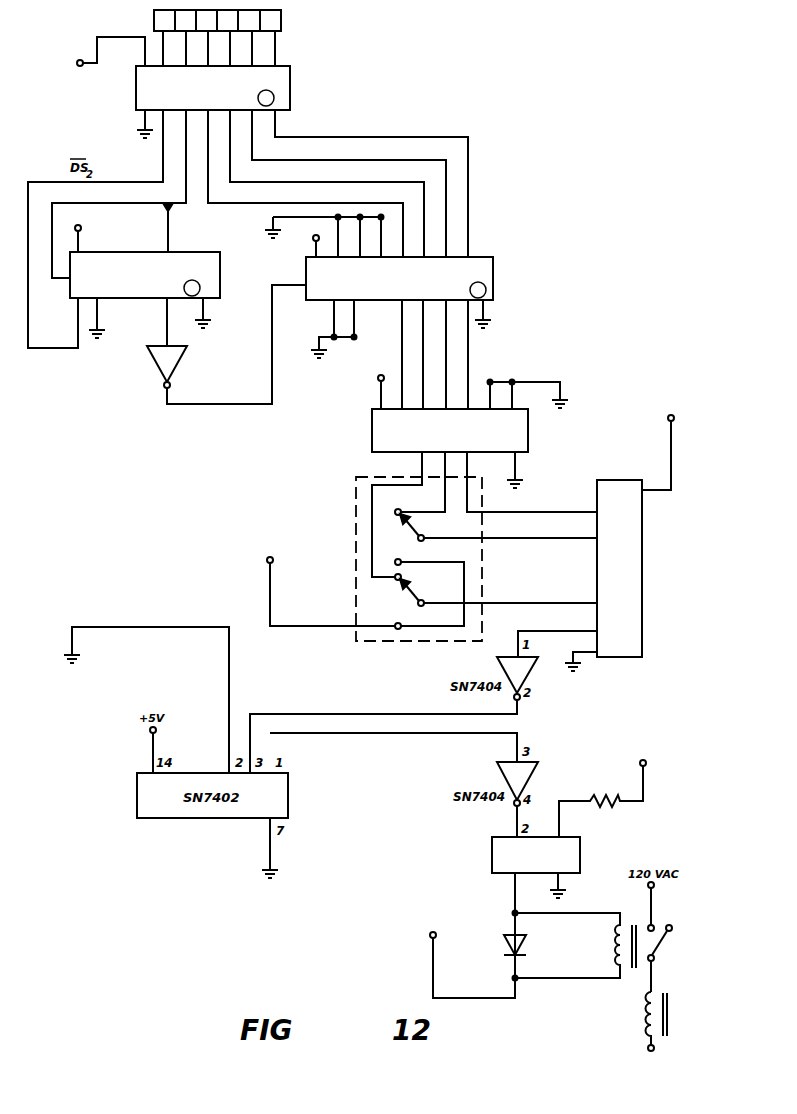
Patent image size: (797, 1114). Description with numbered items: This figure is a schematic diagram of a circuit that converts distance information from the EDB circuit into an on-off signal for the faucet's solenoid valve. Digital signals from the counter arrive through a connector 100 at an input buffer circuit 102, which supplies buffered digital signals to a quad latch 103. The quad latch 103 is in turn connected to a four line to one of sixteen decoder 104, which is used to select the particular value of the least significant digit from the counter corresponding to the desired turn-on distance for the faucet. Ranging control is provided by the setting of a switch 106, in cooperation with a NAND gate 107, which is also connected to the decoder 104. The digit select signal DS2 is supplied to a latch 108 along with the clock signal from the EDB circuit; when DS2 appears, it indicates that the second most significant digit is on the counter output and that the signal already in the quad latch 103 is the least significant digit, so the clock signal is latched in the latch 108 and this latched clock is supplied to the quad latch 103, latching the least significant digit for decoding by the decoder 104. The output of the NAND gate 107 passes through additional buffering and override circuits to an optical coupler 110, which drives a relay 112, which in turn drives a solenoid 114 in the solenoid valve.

The connector 100 is at (281, 20).
The input buffer circuit 102 is at (290, 88).
The quad latch 103 is at (493, 262).
The four line to one of 16 decoder 104 is at (528, 435).
The switch 106 is at (356, 641).
The NAND gate 107 is at (642, 650).
The latch 108 is at (202, 250).
The optical coupler 110 is at (492, 839).
The relay 112 is at (612, 944).
The solenoid 114 is at (644, 1018).